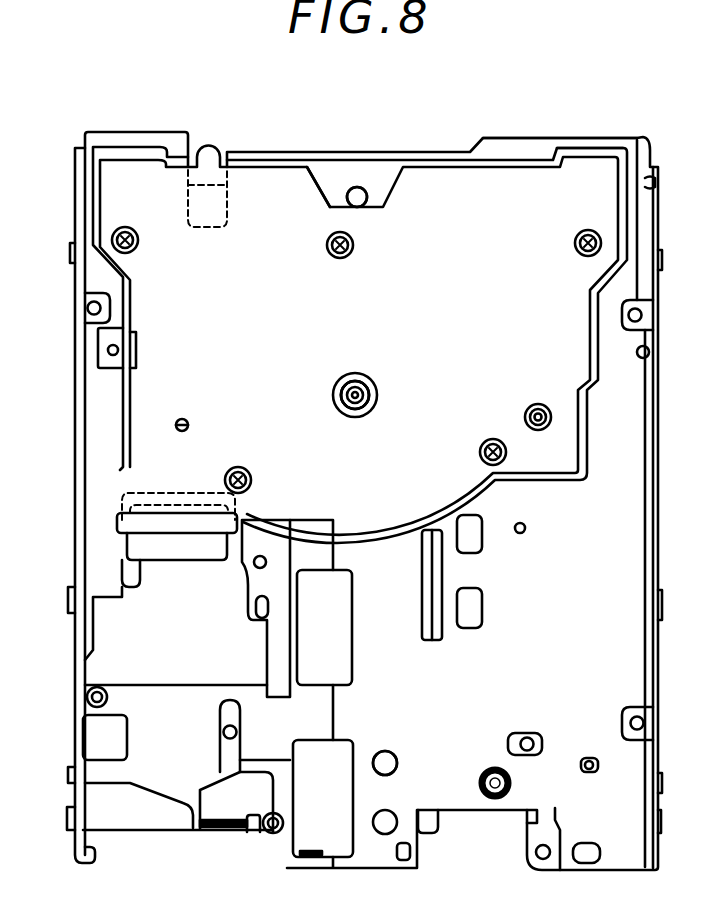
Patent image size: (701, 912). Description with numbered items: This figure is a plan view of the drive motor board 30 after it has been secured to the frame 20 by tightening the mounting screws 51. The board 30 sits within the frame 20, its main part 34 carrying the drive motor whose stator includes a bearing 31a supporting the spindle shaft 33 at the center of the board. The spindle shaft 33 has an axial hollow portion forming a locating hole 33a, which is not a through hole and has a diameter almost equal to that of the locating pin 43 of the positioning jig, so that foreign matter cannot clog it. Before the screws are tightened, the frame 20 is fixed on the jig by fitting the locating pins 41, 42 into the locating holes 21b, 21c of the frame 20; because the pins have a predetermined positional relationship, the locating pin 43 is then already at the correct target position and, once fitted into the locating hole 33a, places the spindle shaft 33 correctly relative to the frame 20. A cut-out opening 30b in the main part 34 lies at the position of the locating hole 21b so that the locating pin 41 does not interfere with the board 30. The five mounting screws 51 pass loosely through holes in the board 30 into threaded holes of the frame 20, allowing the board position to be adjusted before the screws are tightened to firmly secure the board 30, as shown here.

The frame 20 is at (73, 450).
The board 30 is at (428, 203).
The cut-out opening 30b is at (320, 185).
The bearing 31a is at (365, 375).
The spindle shaft 33 is at (380, 393).
The locating hole 33a is at (355, 395).
The main part 34 is at (492, 193).
The locating pin 41 is at (360, 186).
The locating hole 21b is at (357, 197).
The locating pin 42 is at (395, 750).
The locating hole 21c is at (385, 763).
The locating pin 43 is at (340, 382).
The mounting screws 51 is at (130, 227).